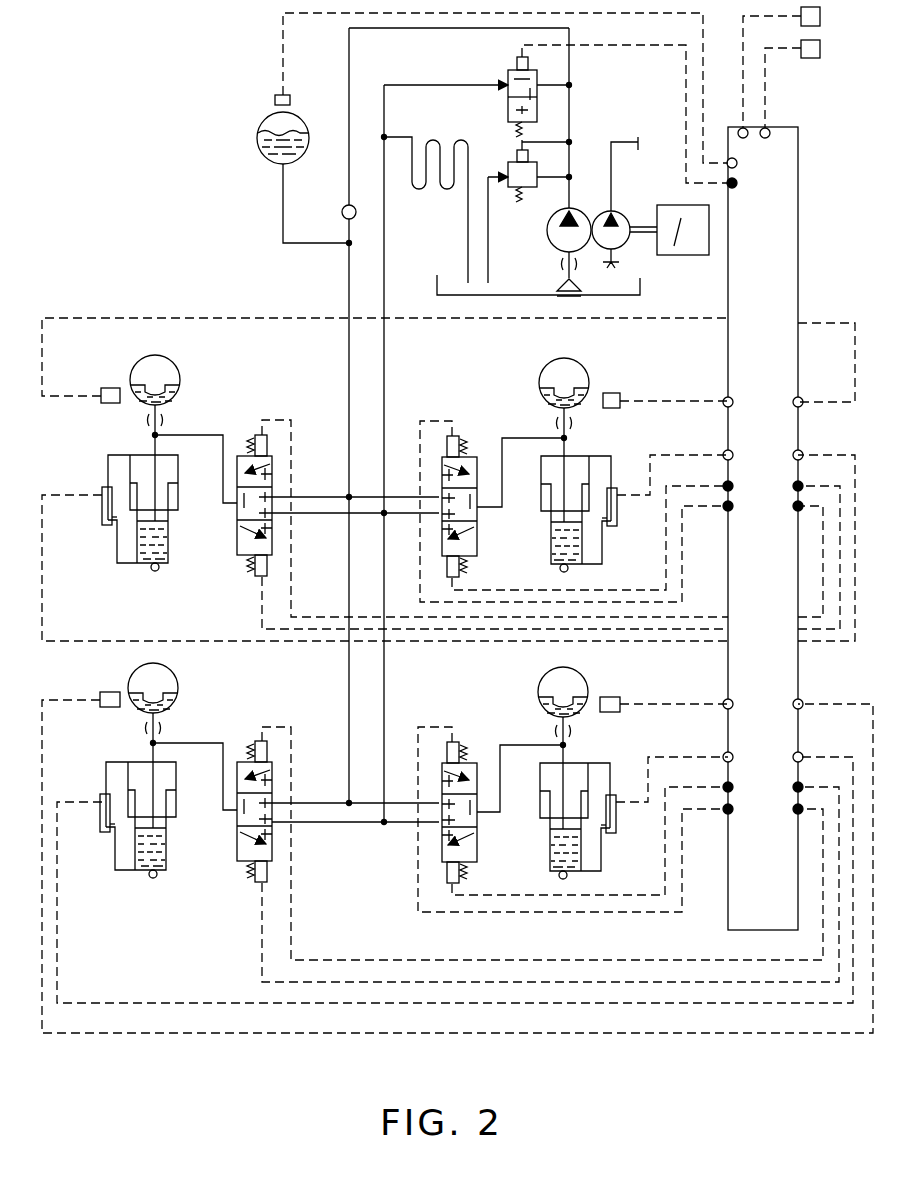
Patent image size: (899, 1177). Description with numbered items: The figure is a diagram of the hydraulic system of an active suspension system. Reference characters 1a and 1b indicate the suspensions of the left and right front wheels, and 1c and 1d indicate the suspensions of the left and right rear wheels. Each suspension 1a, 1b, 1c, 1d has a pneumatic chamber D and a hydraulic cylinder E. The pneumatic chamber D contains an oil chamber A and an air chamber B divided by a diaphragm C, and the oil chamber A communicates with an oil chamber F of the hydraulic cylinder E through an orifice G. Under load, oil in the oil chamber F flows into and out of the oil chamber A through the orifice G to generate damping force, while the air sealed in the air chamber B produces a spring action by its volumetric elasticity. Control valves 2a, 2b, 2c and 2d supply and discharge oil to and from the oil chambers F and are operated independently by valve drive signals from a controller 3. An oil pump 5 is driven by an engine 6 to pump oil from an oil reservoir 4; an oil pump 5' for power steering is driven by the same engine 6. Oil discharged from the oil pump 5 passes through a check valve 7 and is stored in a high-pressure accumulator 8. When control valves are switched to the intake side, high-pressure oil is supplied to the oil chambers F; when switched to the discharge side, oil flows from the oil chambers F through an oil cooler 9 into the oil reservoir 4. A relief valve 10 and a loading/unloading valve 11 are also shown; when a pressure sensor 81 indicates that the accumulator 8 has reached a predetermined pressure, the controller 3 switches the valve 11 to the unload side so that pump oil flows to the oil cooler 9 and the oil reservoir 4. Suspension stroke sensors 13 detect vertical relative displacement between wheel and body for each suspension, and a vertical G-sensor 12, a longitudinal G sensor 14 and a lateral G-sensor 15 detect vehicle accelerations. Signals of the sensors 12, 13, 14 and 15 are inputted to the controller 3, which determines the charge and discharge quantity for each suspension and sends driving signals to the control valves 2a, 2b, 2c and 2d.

The suspension of left front wheel 1a is at (146, 577).
The suspension of right front wheel 1b is at (540, 499).
The suspension of left rear wheel 1c is at (144, 885).
The suspension of right rear wheel 1d is at (540, 815).
The control valve 2a is at (272, 468).
The control valve 2b is at (435, 476).
The control valve 2c is at (274, 775).
The control valve 2d is at (436, 833).
The controller 3 is at (800, 290).
The oil reservoir 4 is at (507, 292).
The oil pump 5 is at (571, 162).
The oil pump for power steering 5' is at (615, 202).
The engine 6 is at (683, 255).
The check valve 7 is at (342, 214).
The high-pressure accumulator 8 is at (262, 152).
The pressure sensor 81 is at (275, 99).
The oil cooler 9 is at (432, 192).
The relief valve 10 is at (516, 164).
The loading/unloading valve 11 is at (508, 108).
The vertical G-sensor 12 is at (109, 388).
The suspension stroke sensor 13 is at (102, 518).
The longitudinal G sensor 14 is at (820, 48).
The lateral G-sensor 15 is at (820, 16).
The oil chamber A is at (178, 396).
The air chamber B is at (152, 360).
The diaphragm C is at (165, 380).
The pneumatic chamber D is at (173, 360).
The hydraulic cylinder E is at (136, 552).
The oil chamber of hydraulic cylinder F is at (170, 560).
The orifice G is at (146, 420).